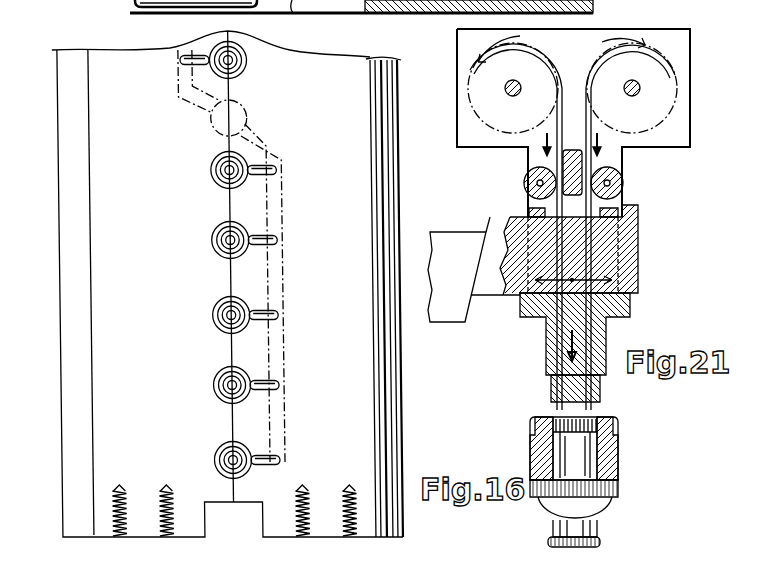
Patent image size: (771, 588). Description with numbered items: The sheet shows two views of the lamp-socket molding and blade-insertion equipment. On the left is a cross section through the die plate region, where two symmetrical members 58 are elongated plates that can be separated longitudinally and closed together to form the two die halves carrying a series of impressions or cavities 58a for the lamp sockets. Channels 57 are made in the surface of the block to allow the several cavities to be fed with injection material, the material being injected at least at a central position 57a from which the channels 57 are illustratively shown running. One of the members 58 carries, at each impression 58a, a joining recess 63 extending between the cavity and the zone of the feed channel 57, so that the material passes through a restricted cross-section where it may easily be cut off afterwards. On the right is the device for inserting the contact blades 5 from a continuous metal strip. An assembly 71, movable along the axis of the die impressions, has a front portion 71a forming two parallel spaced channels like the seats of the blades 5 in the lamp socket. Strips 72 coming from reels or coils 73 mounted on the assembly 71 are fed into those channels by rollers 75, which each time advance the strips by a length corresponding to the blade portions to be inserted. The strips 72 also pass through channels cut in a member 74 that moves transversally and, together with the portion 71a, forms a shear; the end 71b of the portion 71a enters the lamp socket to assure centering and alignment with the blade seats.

In FIG. 16, the symmetrical member 58 is at (98, 152).
In FIG. 16, the impressions or cavities 58a is at (210, 168).
In FIG. 16, the channels 57 is at (200, 115).
In FIG. 16, the central position 57a is at (245, 112).
In FIG. 16, the joining recess 63 is at (258, 392).
In FIG. 21, the reels or coils 73 is at (485, 78).
In FIG. 21, the assembly 71 is at (670, 138).
In FIG. 21, the strips 72 is at (531, 170).
In FIG. 21, the rollers 75 is at (523, 190).
In FIG. 21, the member 74 is at (515, 237).
In FIG. 21, the front portion 71a is at (547, 335).
In FIG. 21, the end 71b is at (550, 392).
In FIG. 21, the contact blades 5 is at (600, 455).